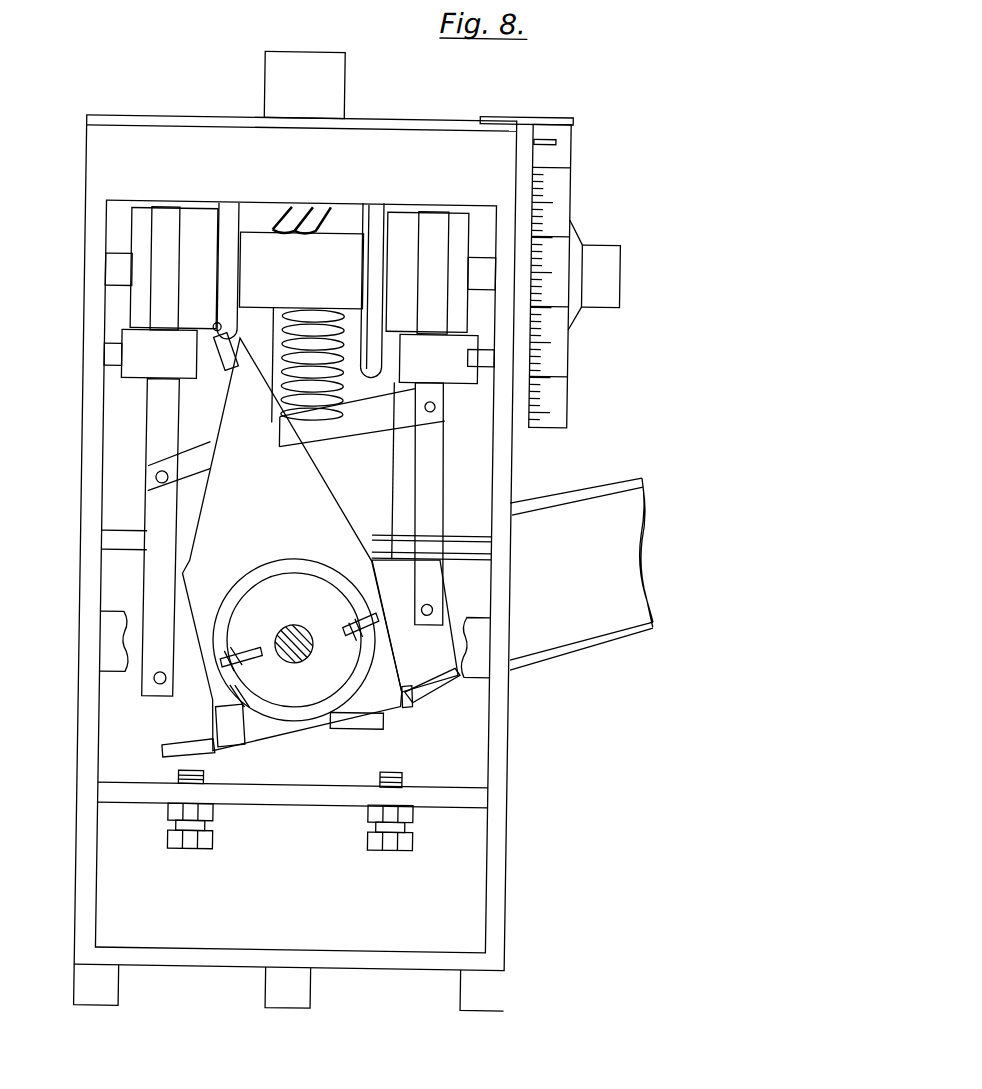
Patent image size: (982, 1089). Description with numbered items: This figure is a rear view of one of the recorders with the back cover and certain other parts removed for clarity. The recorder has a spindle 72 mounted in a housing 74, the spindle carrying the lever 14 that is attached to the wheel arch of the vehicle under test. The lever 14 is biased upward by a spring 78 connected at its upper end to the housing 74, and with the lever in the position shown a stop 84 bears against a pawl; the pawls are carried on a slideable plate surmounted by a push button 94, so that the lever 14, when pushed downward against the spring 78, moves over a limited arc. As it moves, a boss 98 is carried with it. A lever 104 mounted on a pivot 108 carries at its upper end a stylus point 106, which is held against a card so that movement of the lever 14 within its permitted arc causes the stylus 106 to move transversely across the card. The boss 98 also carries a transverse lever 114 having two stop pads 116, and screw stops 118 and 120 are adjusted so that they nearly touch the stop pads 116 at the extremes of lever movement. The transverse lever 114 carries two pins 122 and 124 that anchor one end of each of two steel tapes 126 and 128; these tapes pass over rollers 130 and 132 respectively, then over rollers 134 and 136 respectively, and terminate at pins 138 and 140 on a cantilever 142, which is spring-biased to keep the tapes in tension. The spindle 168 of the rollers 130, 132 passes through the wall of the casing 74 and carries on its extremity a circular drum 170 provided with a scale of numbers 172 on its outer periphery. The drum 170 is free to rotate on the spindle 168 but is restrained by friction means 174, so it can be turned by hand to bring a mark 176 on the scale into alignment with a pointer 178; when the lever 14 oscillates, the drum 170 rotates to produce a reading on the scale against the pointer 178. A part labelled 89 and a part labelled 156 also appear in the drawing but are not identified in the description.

The lever 14 is at (538, 634).
The spindle 72 is at (293, 632).
The housing 74 is at (503, 875).
The spring 78 is at (293, 210).
The stop 84 is at (325, 730).
The bracket 89 is at (360, 726).
The push button 94 is at (294, 60).
The boss 98 is at (292, 702).
The lever 104 is at (215, 539).
The stylus point 106 is at (224, 361).
The pivot 108 is at (411, 698).
The transverse lever 114 is at (434, 663).
The stop pads 116 is at (420, 695).
The screw stop 118 is at (406, 776).
The screw stop 120 is at (184, 840).
The pin 122 is at (431, 608).
The pin 124 is at (157, 695).
The steel tape 126 is at (433, 520).
The steel tape 128 is at (152, 579).
The roller 130 is at (402, 223).
The roller 132 is at (187, 225).
The roller 134 is at (458, 370).
The roller 136 is at (188, 372).
The pin 138 is at (433, 406).
The pin 140 is at (164, 479).
The cantilever 142 is at (391, 427).
The rod 156 is at (228, 218).
The spindle 168 is at (478, 257).
The circular drum 170 is at (559, 143).
The scale of numbers 172 is at (542, 189).
The friction means 174 is at (586, 249).
The mark 176 is at (542, 136).
The pointer 178 is at (491, 115).